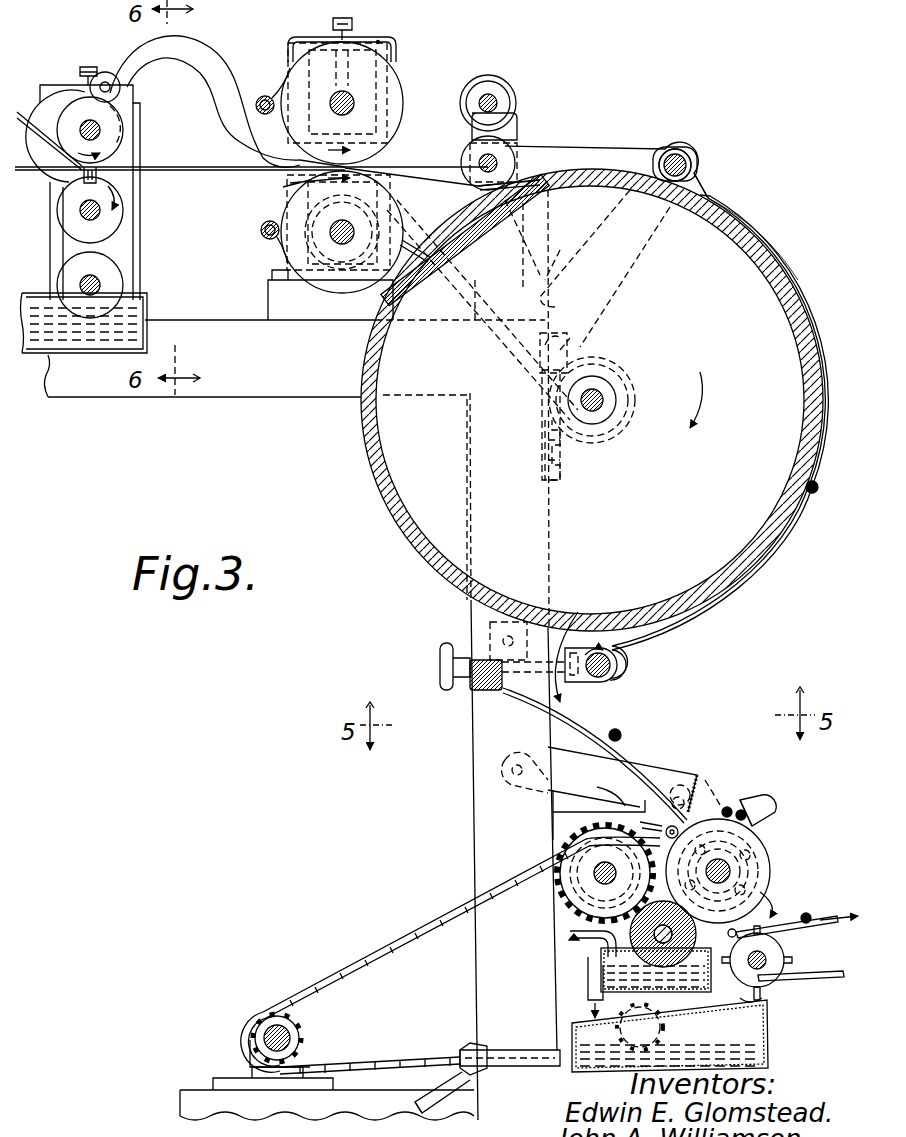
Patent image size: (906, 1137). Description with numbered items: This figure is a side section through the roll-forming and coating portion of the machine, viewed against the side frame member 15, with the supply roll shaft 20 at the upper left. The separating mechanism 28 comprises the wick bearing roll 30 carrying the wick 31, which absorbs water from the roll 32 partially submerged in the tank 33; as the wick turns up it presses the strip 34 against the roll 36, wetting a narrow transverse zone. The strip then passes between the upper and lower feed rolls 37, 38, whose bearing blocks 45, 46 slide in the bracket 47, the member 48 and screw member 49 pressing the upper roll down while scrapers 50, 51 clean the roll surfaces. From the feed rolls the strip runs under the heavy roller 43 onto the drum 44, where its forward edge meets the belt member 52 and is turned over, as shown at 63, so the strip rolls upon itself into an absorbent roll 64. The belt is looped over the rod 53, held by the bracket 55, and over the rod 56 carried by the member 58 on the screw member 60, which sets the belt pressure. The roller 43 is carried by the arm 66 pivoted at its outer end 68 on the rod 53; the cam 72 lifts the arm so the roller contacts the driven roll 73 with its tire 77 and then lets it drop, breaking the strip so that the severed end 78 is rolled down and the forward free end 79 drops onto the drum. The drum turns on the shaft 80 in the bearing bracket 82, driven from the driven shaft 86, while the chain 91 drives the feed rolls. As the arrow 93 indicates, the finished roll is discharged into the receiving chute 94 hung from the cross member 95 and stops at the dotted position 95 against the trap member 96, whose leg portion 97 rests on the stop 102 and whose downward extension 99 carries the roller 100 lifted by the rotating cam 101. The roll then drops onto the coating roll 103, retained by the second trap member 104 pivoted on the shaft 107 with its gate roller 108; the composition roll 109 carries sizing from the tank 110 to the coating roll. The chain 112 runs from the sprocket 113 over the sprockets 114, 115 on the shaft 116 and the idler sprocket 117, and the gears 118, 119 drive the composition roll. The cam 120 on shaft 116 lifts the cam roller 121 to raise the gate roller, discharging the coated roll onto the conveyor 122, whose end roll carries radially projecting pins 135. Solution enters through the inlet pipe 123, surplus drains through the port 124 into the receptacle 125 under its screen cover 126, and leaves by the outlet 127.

The side frame member 15 is at (490, 800).
The axial shaft 20 is at (106, 72).
The separating mechanism 28 is at (66, 72).
The wick bearing roll 30 is at (120, 215).
The wick 31 is at (100, 180).
The roll 32 is at (120, 268).
The tank 33 is at (147, 300).
The strip 34 is at (200, 157).
The roll 36 is at (108, 126).
The upper feed roll 37 is at (385, 100).
The lower feed roll 38 is at (393, 228).
The heavy roller 43 is at (518, 150).
The drum 44 is at (736, 228).
The bearing block 45 is at (372, 85).
The bearing block 46 is at (385, 208).
The bracket 47 is at (300, 181).
The member 48 is at (388, 50).
The screw member 49 is at (352, 26).
The scraper 50 is at (272, 98).
The scraper 51 is at (275, 245).
The belt member 52 is at (780, 265).
The rod 53 is at (694, 165).
The bracket 55 is at (470, 132).
The rod 56 is at (611, 665).
The member 58 is at (600, 683).
The screw member 60 is at (455, 650).
The turned-over forward edge 63 is at (718, 200).
The absorbent roll 64 is at (814, 496).
The arm 66 is at (215, 58).
The outer end of arm 68 is at (685, 148).
The cam 72 is at (33, 112).
The driven roll 73 is at (510, 98).
The tire 77 is at (488, 75).
The severed end 78 is at (482, 190).
The forward free end 79 is at (455, 250).
The shaft 80 is at (618, 398).
The bearing bracket 82 is at (565, 455).
The driven shaft 86 is at (260, 1038).
The chain 91 is at (576, 342).
The arrow 93 is at (579, 644).
The receiving chute 94 is at (605, 757).
The cross member 95 is at (488, 692).
The trap member 96 is at (700, 775).
The leg portion 97 is at (650, 765).
The downward extension 99 is at (640, 823).
The roller 100 is at (666, 835).
The rotating cam 101 is at (684, 811).
The stop 102 is at (610, 796).
The coating roll 103 is at (770, 883).
The second trap member 104 is at (772, 816).
The shaft 107 is at (570, 893).
The gate roller 108 is at (772, 805).
The composition roll 109 is at (600, 990).
The tank 110 is at (588, 1005).
The chain 112 is at (384, 950).
The sprocket 113 is at (290, 1028).
The sprocket 114 is at (553, 857).
The sprocket 115 is at (706, 871).
The shaft 116 is at (732, 864).
The idler sprocket 117 is at (660, 1030).
The gear 118 is at (568, 938).
The gear 119 is at (630, 934).
The cam 120 is at (760, 860).
The cam roller 121 is at (716, 810).
The conveyor 122 is at (835, 928).
The inlet pipe 123 is at (571, 942).
The port 124 is at (586, 975).
The receptacle 125 is at (770, 1022).
The screen cover 126 is at (765, 1002).
The outlet 127 is at (525, 1038).
The radially projecting pin 135 is at (792, 974).